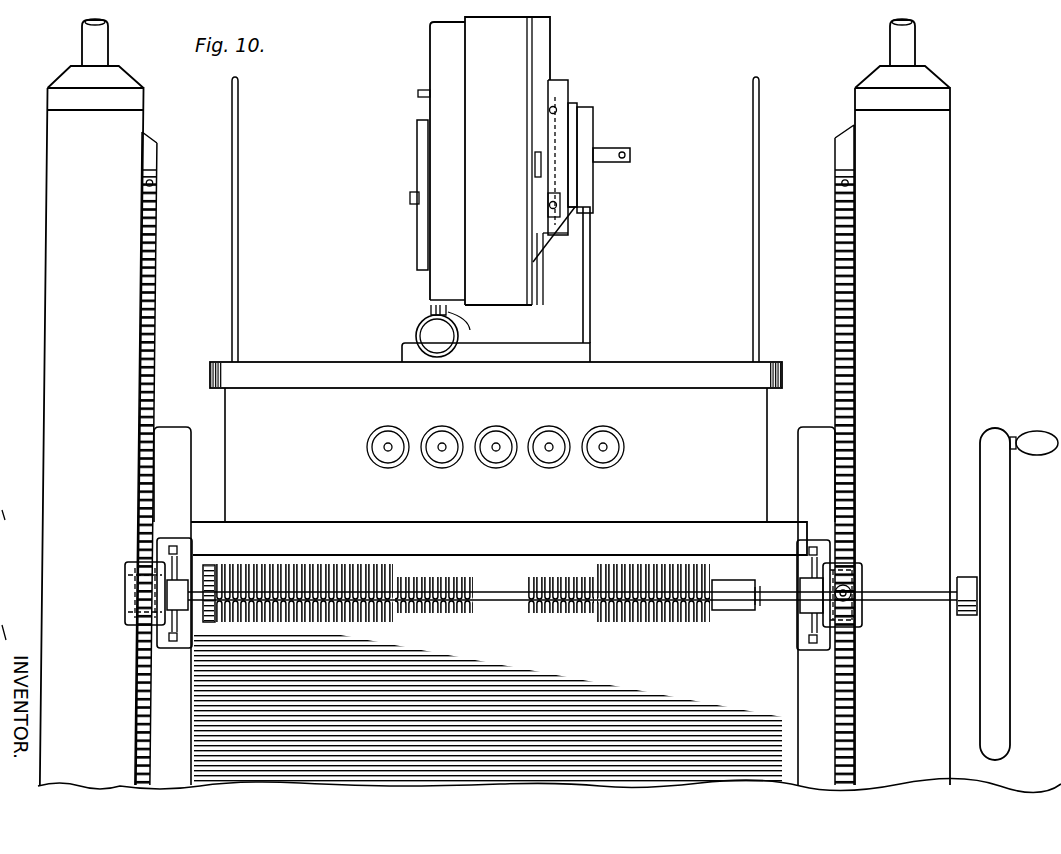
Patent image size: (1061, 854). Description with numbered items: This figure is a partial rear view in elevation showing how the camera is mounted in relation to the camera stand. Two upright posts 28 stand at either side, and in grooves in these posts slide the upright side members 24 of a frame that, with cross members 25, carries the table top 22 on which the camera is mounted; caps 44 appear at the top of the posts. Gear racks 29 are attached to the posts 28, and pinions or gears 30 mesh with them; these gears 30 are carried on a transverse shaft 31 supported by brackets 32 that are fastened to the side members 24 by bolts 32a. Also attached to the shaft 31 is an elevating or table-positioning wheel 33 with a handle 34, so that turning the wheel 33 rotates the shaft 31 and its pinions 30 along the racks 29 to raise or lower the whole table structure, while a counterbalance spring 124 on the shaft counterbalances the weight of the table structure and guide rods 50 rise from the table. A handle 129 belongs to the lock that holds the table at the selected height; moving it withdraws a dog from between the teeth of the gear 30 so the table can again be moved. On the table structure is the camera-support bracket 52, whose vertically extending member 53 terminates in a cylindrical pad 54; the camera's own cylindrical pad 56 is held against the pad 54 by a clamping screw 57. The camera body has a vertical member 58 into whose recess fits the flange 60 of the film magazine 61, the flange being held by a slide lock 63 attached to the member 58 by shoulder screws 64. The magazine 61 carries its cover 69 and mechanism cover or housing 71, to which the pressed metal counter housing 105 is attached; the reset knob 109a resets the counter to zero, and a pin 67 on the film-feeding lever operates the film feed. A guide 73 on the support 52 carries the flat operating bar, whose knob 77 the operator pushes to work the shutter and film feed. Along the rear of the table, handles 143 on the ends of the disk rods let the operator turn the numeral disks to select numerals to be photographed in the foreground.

The table-top proper 22 is at (692, 372).
The upright side members 24 is at (172, 440).
The cross members 25 is at (706, 532).
The upright posts 28 is at (65, 163).
The gear racks 29 is at (148, 203).
The gears 30 is at (128, 624).
The transverse shaft 31 is at (491, 605).
The brackets 32 is at (195, 633).
The bolts 32a is at (174, 542).
The elevating or table-positioning wheel 33 is at (1000, 544).
The handle 34 is at (1043, 456).
The cap 44 is at (88, 47).
The guide rod 50 is at (236, 213).
The camera-support bracket 52 is at (573, 352).
The vertically extending member 53 is at (590, 245).
The cylindrical pad or block-like part 54 is at (578, 105).
The cylindrical pad or block-like part 56 is at (590, 118).
The clamping screw 57 is at (615, 163).
The vertical extending member 58 is at (566, 80).
The flange 60 is at (543, 37).
The film magazine 61 is at (503, 297).
The slide lock 63 is at (552, 184).
The shoulder screws 64 is at (550, 117).
The pin 67 is at (418, 94).
The cover 69 is at (536, 270).
The mechanism cover or housing 71 is at (446, 52).
The guide 73 is at (460, 326).
The handle or knob 77 is at (436, 336).
The pressed metal housing 105 is at (418, 242).
The reset knob 109a is at (410, 198).
The counterbalance spring 124 is at (660, 615).
The handle 129 is at (852, 583).
The handles 143 is at (388, 468).